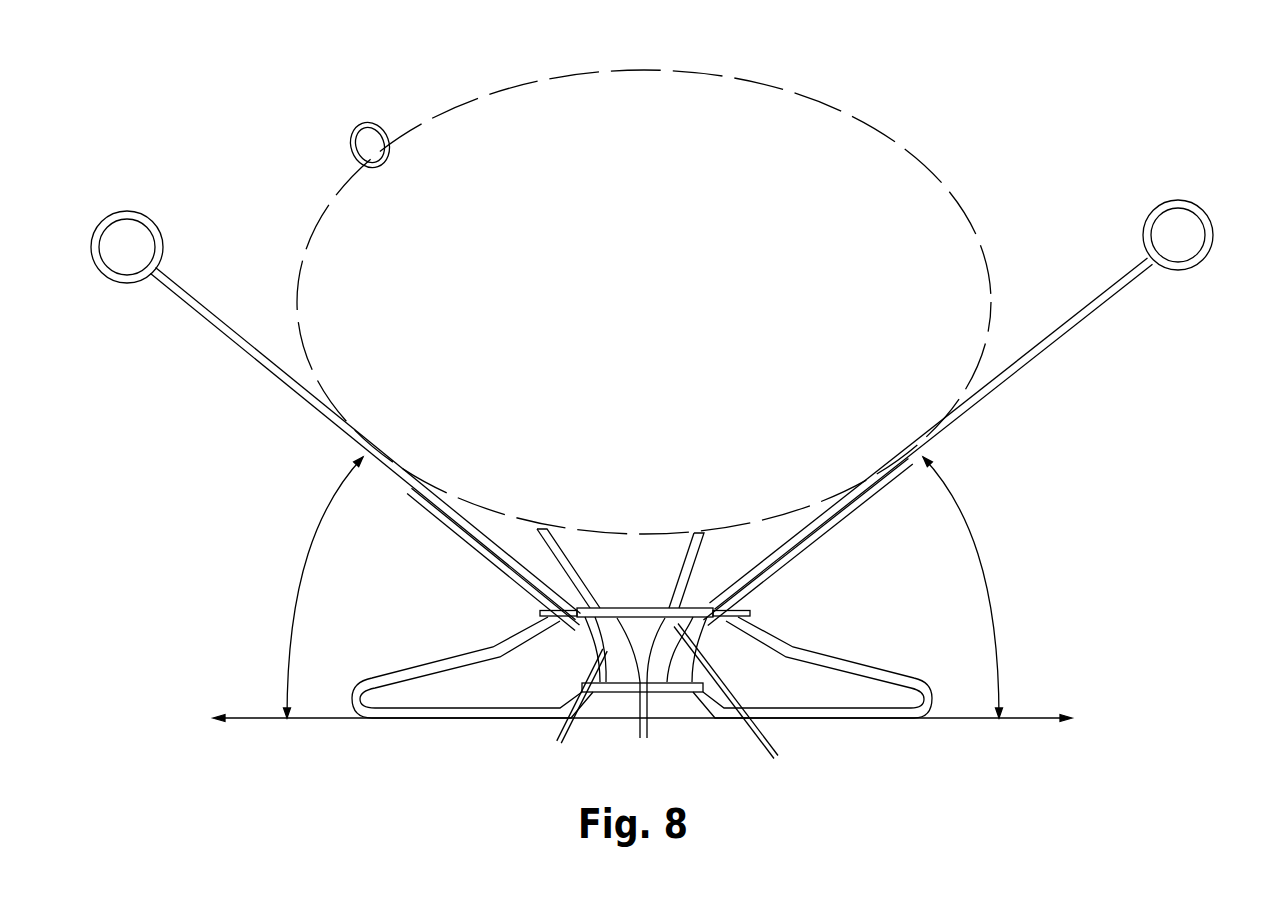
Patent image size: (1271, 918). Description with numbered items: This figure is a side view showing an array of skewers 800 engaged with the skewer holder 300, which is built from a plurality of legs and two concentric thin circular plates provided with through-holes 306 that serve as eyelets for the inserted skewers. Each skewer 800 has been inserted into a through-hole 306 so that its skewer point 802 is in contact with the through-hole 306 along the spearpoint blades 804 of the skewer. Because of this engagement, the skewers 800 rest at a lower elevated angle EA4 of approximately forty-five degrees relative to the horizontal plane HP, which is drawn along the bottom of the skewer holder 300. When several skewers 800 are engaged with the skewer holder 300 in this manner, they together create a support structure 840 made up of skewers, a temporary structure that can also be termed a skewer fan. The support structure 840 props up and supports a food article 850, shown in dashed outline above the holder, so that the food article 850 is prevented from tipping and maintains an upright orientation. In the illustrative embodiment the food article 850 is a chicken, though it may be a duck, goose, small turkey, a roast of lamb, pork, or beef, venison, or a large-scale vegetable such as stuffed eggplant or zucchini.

The skewer holder 300 is at (833, 630).
The through-holes 306 is at (665, 608).
The skewers 800 is at (163, 222).
The skewer point 802 is at (583, 627).
The spearpoint blades 804 is at (578, 625).
The support structure 840 is at (996, 398).
The food article 850 is at (702, 277).
The lower elevated angle EA4 is at (295, 587).
The horizontal plane HP is at (950, 720).